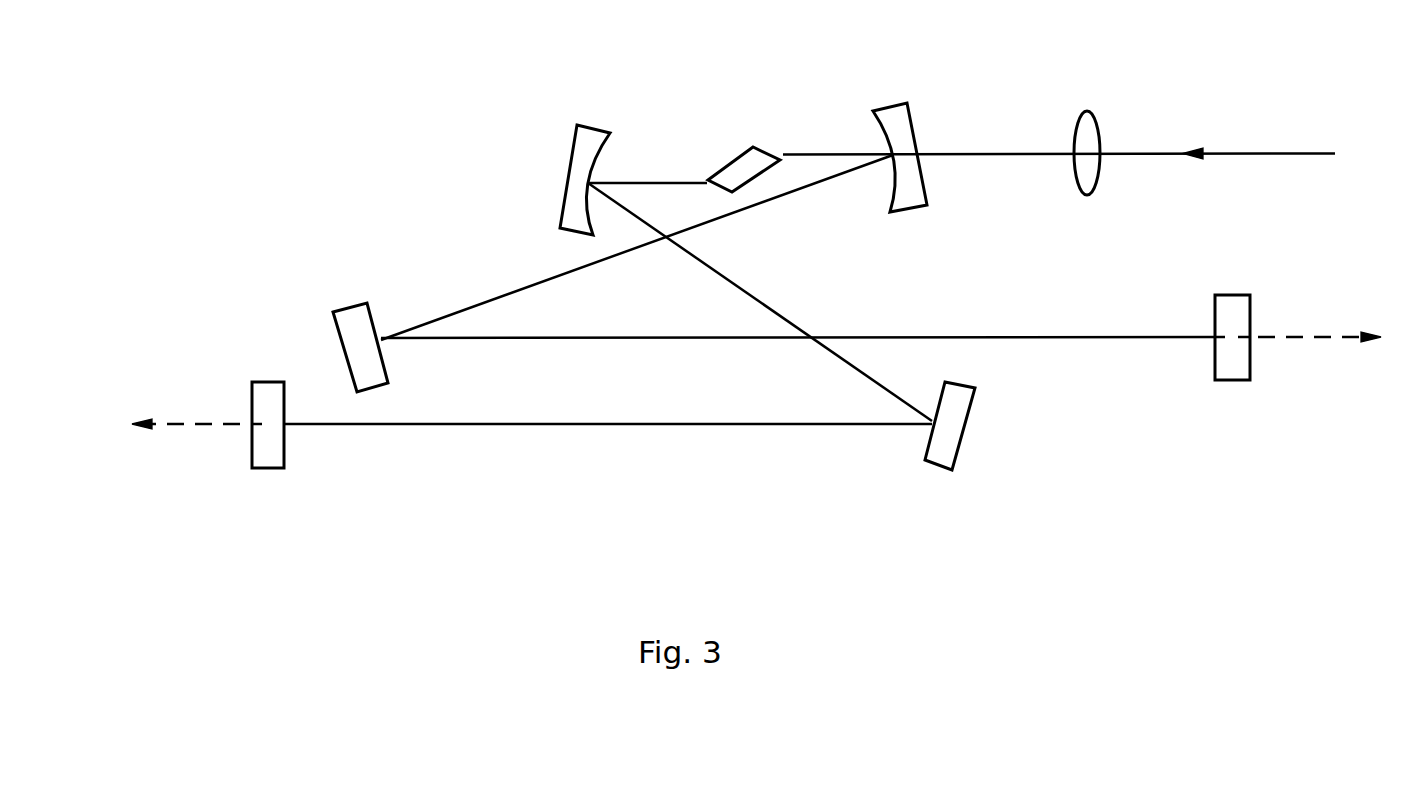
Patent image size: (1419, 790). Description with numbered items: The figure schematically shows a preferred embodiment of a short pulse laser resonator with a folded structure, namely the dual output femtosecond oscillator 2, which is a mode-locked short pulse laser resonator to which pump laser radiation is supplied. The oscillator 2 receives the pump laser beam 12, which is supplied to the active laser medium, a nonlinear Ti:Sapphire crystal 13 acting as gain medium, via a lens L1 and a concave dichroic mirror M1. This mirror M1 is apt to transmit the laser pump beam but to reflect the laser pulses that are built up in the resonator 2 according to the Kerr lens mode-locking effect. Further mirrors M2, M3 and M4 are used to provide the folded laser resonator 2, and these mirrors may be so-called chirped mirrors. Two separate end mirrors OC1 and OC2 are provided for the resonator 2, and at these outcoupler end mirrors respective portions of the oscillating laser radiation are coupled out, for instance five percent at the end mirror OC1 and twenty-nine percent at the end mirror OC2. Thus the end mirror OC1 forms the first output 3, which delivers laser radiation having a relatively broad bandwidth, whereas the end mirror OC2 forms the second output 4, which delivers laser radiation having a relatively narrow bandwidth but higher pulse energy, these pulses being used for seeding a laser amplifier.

The dual output femtosecond oscillator 2 is at (1150, 544).
The first output 3 is at (1337, 336).
The second output 4 is at (161, 426).
The pump laser beam 12 is at (1222, 148).
The Ti:Sapphire crystal 13 is at (755, 163).
The lens L1 is at (1082, 126).
The concave dichroic mirror M1 is at (895, 135).
The mirror M2 is at (561, 167).
The mirror M3 is at (799, 326).
The mirror M4 is at (595, 273).
The end mirror OC1 is at (846, 322).
The end mirror OC2 is at (554, 415).